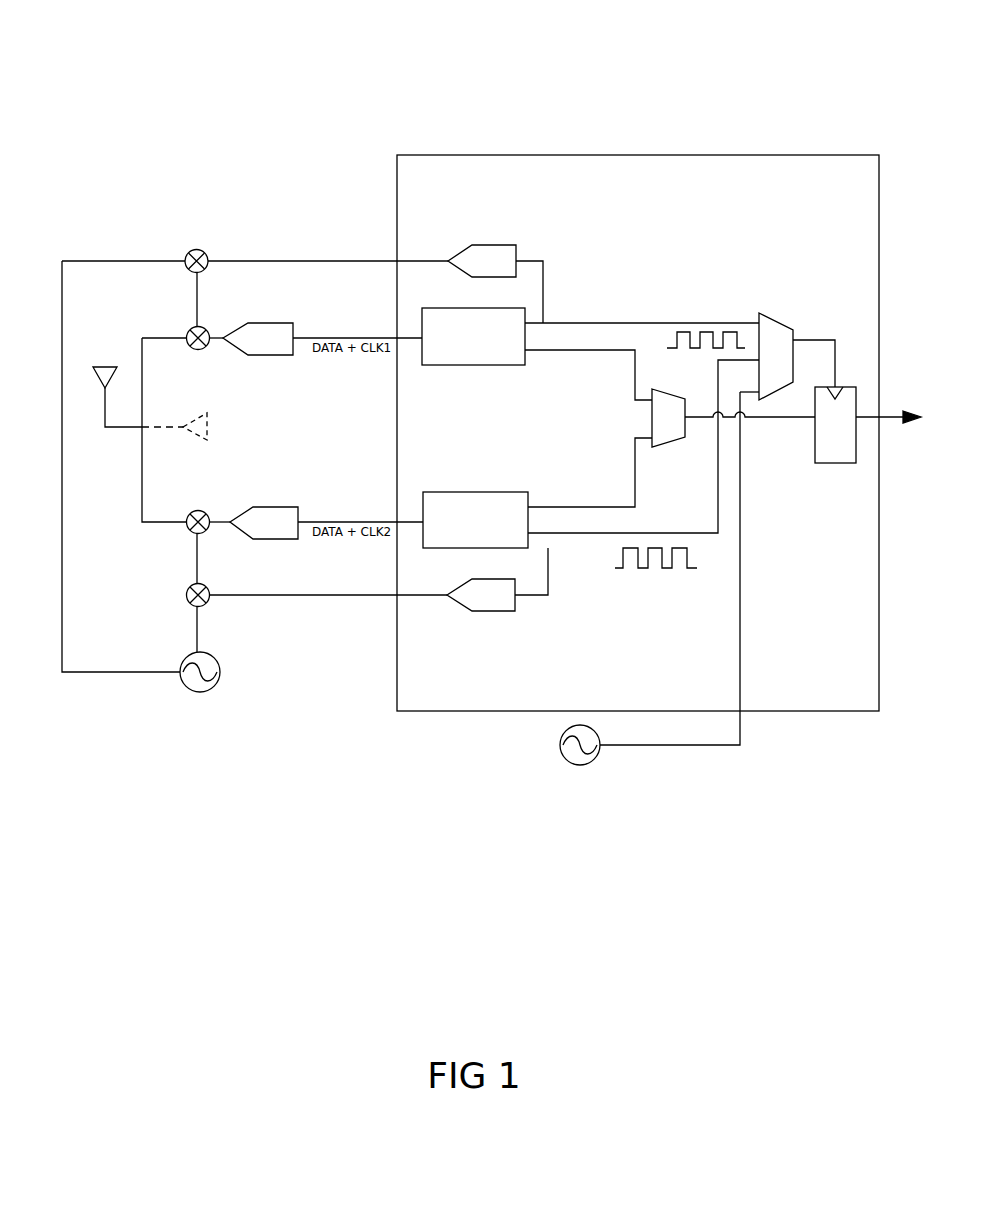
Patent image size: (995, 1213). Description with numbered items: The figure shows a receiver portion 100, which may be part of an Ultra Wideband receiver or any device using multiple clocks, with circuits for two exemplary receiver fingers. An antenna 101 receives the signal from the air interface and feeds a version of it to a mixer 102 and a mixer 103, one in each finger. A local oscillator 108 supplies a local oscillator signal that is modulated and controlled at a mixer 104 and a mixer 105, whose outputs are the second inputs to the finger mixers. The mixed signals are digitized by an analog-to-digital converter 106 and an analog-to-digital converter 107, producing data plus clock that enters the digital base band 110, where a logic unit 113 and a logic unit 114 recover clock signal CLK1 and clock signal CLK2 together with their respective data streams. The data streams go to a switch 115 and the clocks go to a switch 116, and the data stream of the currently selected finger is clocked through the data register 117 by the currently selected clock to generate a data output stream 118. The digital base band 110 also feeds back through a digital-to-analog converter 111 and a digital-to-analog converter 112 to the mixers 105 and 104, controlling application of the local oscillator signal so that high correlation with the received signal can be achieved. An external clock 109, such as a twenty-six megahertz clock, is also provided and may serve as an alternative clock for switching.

The receiver portion 100 is at (834, 73).
The antenna 101 is at (108, 431).
The mixer 102 is at (190, 511).
The mixer 103 is at (187, 328).
The mixer 104 is at (206, 607).
The mixer 105 is at (190, 247).
The analog-to-digital converter 106 is at (266, 506).
The analog-to-digital converter 107 is at (262, 322).
The local oscillator 108 is at (194, 693).
The external clock 109 is at (568, 766).
The digital base band 110 is at (652, 155).
The digital-to-analog converter 111 is at (516, 250).
The digital-to-analog converter 112 is at (490, 611).
The logic unit 113 is at (437, 365).
The logic unit 114 is at (515, 491).
The switch 115 is at (662, 443).
The switch 116 is at (780, 318).
The data register 117 is at (832, 463).
The data output stream 118 is at (888, 421).